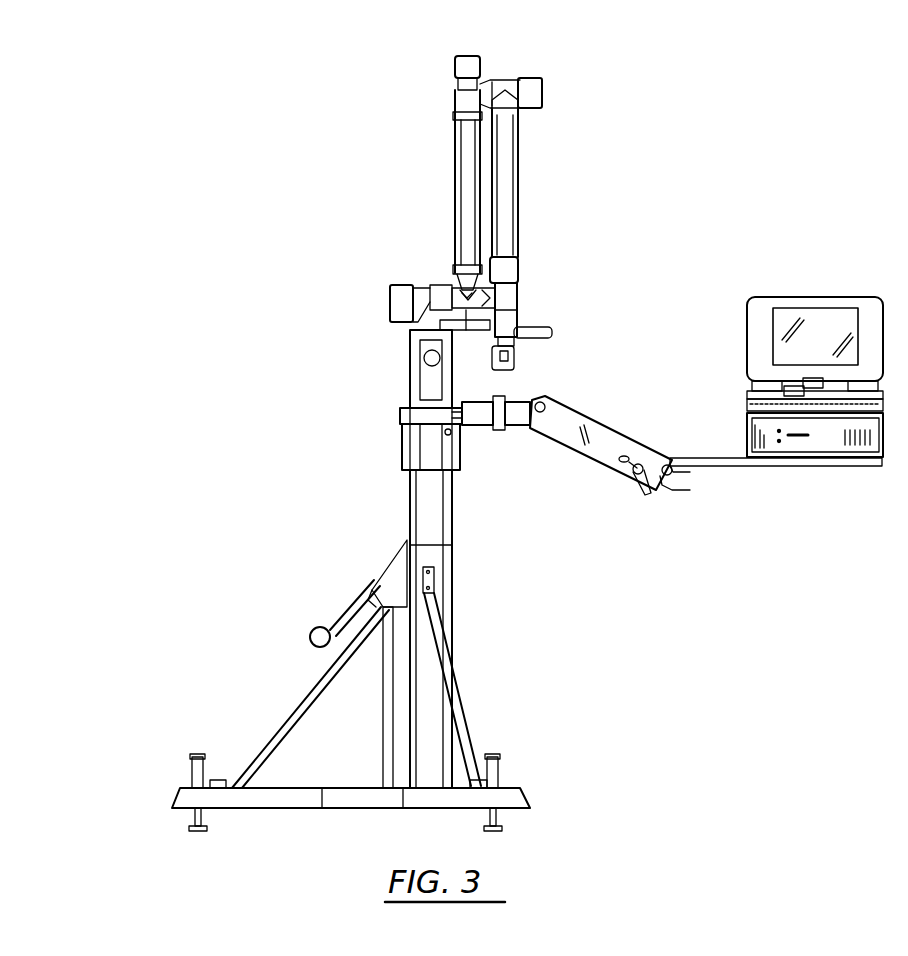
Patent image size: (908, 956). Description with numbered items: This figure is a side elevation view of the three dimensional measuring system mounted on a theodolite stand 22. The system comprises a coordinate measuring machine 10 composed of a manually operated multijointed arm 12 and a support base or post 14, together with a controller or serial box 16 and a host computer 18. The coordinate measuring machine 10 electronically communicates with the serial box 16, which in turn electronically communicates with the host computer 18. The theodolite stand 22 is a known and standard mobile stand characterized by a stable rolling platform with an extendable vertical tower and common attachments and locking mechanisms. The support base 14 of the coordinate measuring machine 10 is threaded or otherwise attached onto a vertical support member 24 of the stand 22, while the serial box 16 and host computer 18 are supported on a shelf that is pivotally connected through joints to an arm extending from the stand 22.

The coordinate measuring machine 10 is at (424, 166).
The multijointed arm 12 is at (446, 220).
The support base 14 is at (404, 386).
The serial box 16 is at (744, 425).
The host computer 18 is at (742, 327).
The theodolite stand 22 is at (470, 658).
The vertical support member 24 is at (453, 508).